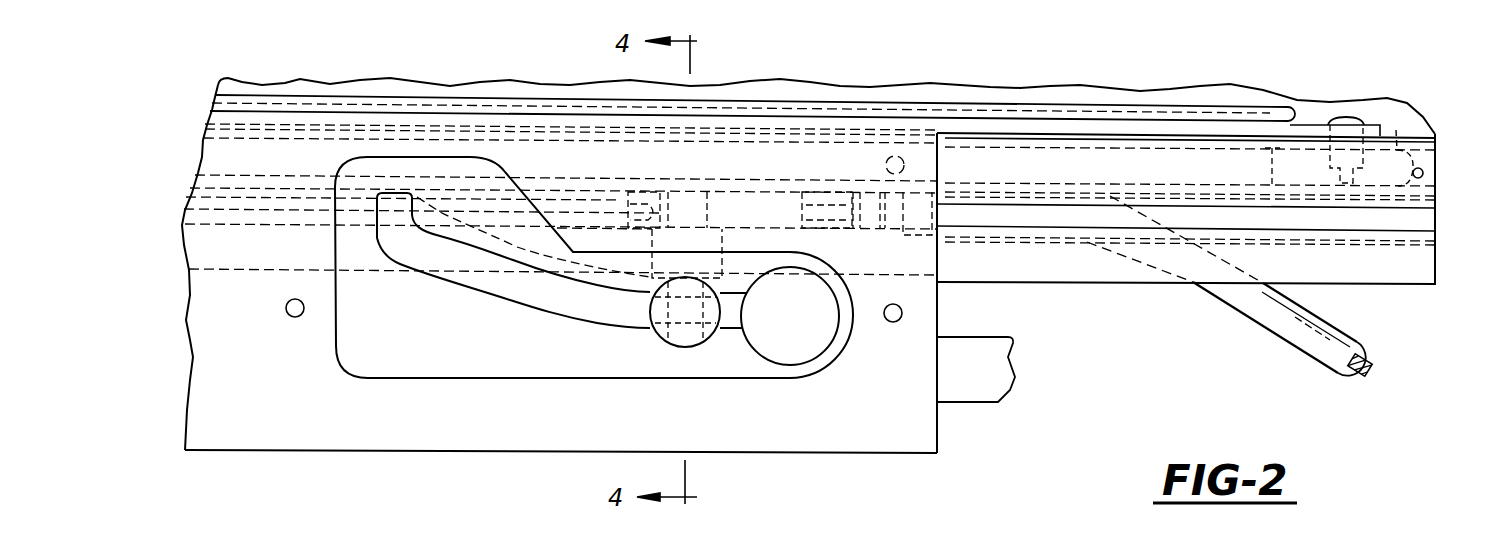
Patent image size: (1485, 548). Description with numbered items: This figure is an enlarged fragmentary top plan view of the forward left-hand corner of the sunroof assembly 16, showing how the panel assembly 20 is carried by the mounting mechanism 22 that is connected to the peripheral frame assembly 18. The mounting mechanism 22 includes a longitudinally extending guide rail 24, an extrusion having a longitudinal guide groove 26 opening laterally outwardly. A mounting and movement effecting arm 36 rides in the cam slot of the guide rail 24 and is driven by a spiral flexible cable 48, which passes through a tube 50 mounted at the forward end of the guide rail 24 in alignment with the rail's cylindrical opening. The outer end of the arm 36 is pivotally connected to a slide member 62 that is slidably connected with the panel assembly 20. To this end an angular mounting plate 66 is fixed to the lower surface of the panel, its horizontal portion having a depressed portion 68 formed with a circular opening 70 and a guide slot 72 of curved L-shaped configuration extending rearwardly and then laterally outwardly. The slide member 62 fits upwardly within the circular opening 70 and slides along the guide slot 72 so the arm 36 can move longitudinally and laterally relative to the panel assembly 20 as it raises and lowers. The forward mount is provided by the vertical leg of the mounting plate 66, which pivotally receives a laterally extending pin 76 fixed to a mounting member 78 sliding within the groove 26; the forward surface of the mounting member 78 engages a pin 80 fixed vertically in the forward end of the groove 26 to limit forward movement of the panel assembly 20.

The sunroof assembly 16 is at (1213, 85).
The peripheral frame assembly 18 is at (993, 382).
The panel assembly 20 is at (813, 462).
The mounting mechanism 22 is at (1079, 290).
The guide rail 24 is at (1273, 262).
The longitudinal guide groove 26 is at (990, 147).
The mounting and movement effecting arm 36 is at (718, 222).
The spiral flexible cable 48 is at (1345, 379).
The tube 50 is at (1293, 338).
The slide member 62 is at (653, 342).
The angular mounting plate 66 is at (561, 432).
The depressed portion 68 is at (410, 364).
The circular opening 70 is at (812, 360).
The guide slot 72 is at (487, 288).
The laterally extending pin 76 is at (1342, 122).
The mounting member 78 is at (1398, 147).
The pin 80 is at (1423, 171).